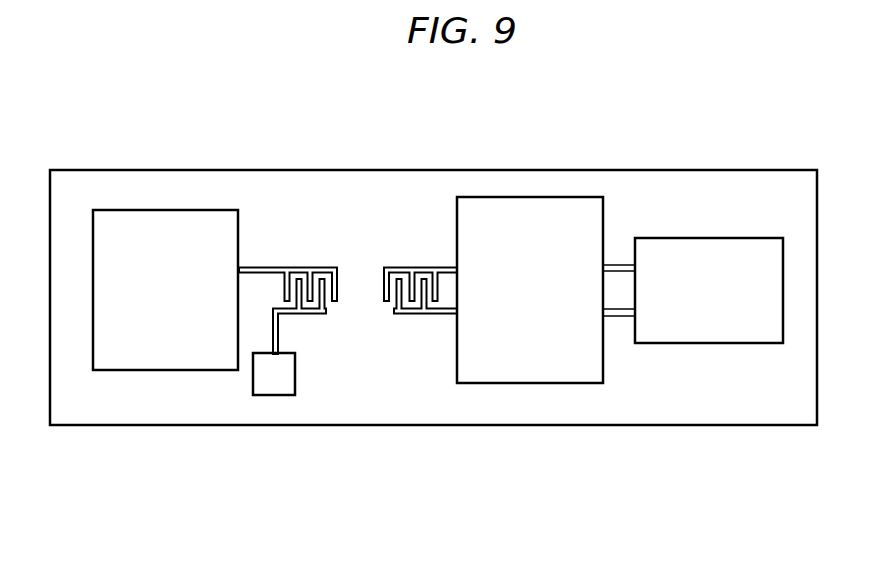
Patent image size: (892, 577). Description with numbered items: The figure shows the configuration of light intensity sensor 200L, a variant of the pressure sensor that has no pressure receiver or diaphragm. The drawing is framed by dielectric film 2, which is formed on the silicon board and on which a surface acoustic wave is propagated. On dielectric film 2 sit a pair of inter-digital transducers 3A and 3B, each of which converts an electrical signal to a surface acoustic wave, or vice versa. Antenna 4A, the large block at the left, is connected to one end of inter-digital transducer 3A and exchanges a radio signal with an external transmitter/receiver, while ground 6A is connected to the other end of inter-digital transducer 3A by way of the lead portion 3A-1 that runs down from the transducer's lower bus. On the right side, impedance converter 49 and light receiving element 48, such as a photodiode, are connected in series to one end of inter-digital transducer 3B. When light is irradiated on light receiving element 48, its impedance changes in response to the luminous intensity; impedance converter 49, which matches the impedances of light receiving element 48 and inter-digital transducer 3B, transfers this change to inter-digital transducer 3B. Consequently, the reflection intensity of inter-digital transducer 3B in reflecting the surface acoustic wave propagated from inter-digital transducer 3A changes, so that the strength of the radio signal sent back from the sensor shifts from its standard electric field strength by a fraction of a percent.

The light intensity sensor 200L is at (668, 148).
The dielectric film 2 is at (137, 182).
The inter-digital transducer 3A is at (306, 287).
The lead-out electrode of interdigital electrode 3A-1 is at (327, 314).
The inter-digital transducer 3B is at (410, 265).
The antenna 4A is at (140, 370).
The ground 6A is at (285, 385).
The light receiving element 48 is at (710, 345).
The impedance converter 49 is at (568, 378).